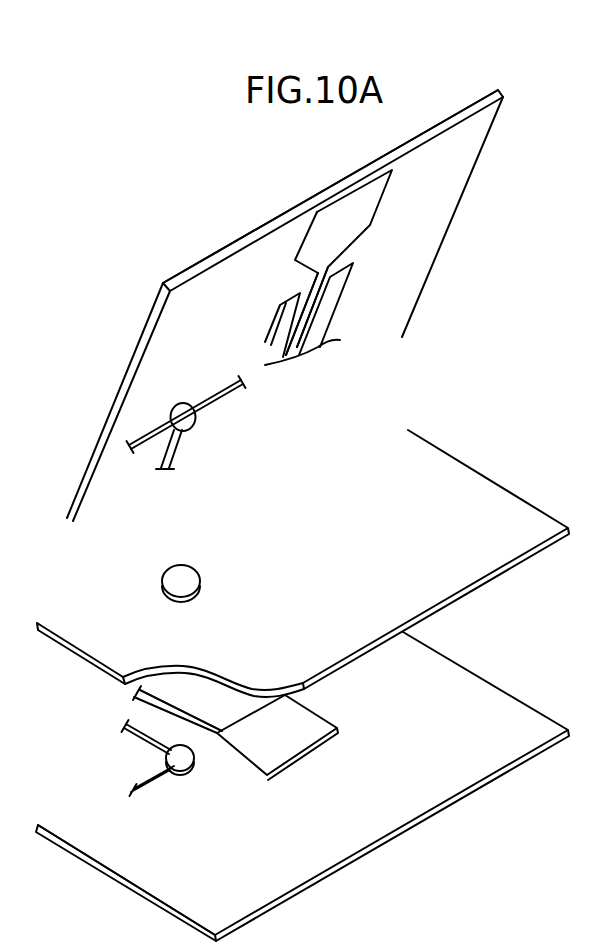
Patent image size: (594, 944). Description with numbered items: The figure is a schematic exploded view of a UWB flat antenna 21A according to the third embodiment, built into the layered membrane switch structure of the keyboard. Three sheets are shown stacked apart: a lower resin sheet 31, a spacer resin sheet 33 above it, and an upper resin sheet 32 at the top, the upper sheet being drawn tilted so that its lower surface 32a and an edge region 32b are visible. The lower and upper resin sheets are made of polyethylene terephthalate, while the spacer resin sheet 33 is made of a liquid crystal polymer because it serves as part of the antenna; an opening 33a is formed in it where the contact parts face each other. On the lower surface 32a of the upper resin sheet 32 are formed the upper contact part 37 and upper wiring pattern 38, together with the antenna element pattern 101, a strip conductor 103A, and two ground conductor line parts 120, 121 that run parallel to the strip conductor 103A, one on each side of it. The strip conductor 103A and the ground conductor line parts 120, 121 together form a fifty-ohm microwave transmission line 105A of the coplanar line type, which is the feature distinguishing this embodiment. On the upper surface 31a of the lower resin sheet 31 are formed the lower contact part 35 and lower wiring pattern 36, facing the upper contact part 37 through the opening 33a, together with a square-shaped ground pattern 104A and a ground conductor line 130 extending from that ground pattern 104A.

The UWB flat antenna 21A is at (132, 149).
The lower resin sheet 31 is at (287, 786).
The upper surface of the lower resin sheet 31a is at (100, 848).
The upper resin sheet 32 is at (270, 305).
The lower surface of the upper resin sheet 32a is at (132, 413).
The end edge of dielectric plate 32b is at (290, 213).
The spacer resin sheet 33 is at (72, 661).
The opening 33a is at (182, 585).
The lower contact part 35 is at (177, 758).
The lower wiring pattern 36 is at (135, 780).
The upper contact part 37 is at (185, 416).
The upper wiring pattern 38 is at (132, 468).
The antenna element pattern 101 is at (345, 213).
The strip conductor 103A is at (317, 312).
The ground pattern 104A is at (313, 709).
The microwave transmission line 105A is at (422, 314).
The ground conductor line part 120 is at (347, 283).
The ground conductor line part 121 is at (338, 340).
The ground conductor line 130 is at (157, 705).